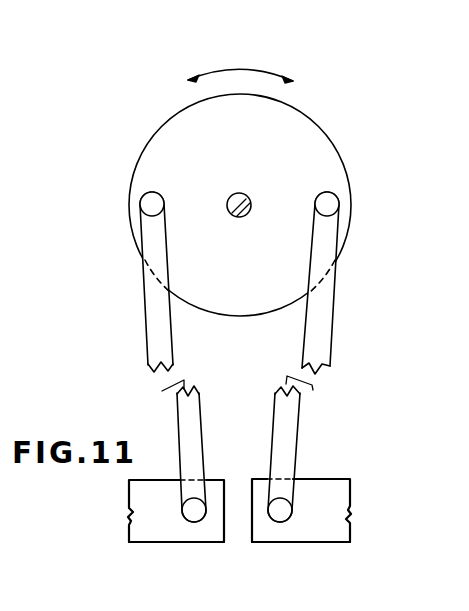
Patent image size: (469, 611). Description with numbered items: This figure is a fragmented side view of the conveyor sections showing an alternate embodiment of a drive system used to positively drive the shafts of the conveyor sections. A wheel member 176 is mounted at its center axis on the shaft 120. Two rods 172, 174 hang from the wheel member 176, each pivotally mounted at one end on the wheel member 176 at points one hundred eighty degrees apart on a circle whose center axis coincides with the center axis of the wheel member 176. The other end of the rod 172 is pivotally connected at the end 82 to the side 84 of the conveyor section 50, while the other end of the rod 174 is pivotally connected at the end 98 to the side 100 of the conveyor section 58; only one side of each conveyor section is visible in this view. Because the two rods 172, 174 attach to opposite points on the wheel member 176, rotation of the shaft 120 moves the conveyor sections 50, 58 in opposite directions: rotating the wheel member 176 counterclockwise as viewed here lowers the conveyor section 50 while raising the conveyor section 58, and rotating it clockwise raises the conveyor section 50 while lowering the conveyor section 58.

The wheel member 176 is at (300, 127).
The shaft 120 is at (235, 197).
The rod 172 is at (170, 405).
The rod 174 is at (302, 405).
The conveyor section 50 is at (120, 531).
The conveyor section 58 is at (360, 526).
The side 84 is at (165, 540).
The end 82 is at (215, 540).
The end 98 is at (257, 540).
The side 100 is at (305, 540).